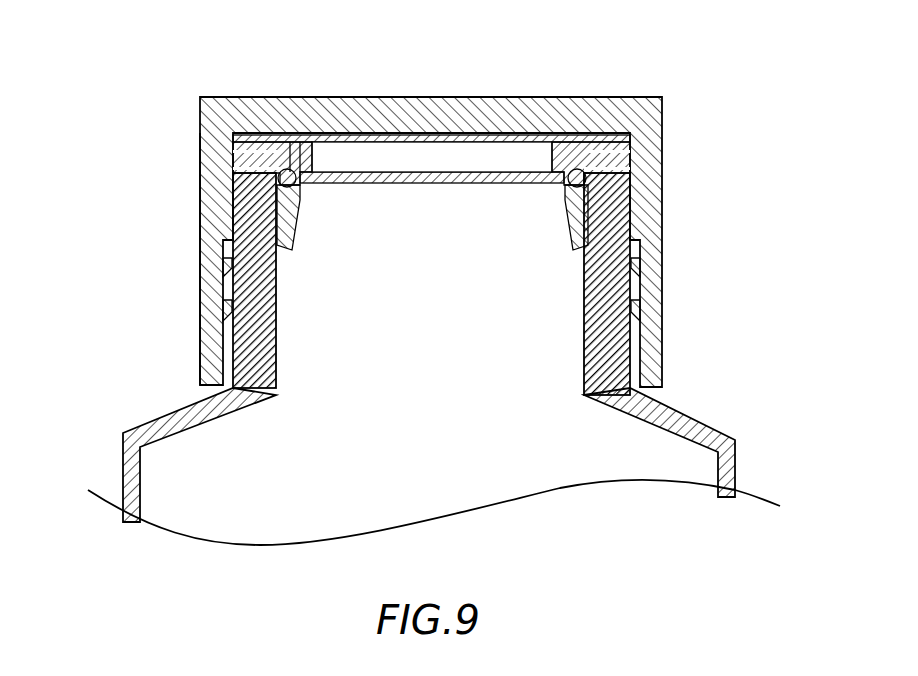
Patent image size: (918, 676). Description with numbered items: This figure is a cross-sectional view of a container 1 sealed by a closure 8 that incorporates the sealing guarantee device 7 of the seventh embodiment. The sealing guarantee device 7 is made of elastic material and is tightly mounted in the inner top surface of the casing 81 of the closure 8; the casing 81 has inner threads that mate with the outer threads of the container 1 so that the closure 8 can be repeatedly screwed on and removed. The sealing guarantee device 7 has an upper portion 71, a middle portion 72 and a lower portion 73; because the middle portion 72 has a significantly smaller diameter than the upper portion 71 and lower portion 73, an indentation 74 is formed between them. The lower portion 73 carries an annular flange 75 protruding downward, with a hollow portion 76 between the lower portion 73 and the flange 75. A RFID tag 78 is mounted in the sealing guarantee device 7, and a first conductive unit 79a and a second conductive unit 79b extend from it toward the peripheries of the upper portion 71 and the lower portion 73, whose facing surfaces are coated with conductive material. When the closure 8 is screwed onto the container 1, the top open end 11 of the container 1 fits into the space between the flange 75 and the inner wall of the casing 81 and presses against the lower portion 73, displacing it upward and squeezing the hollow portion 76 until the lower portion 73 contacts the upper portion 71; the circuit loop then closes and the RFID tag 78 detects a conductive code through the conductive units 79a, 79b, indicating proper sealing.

The container 1 is at (735, 456).
The top open end 11 is at (648, 195).
The sealing guarantee device 7 is at (435, 176).
The closure 8 is at (468, 94).
The upper portion 71 is at (648, 138).
The middle portion 72 is at (574, 148).
The lower portion 73 is at (646, 164).
The indentation 74 is at (246, 158).
The annular flange 75 is at (292, 252).
The hollow portion 76 is at (302, 192).
The RFID tag 78 is at (517, 152).
The first conductive unit 79a is at (296, 135).
The second conductive unit 79b is at (306, 150).
The casing 81 is at (202, 291).